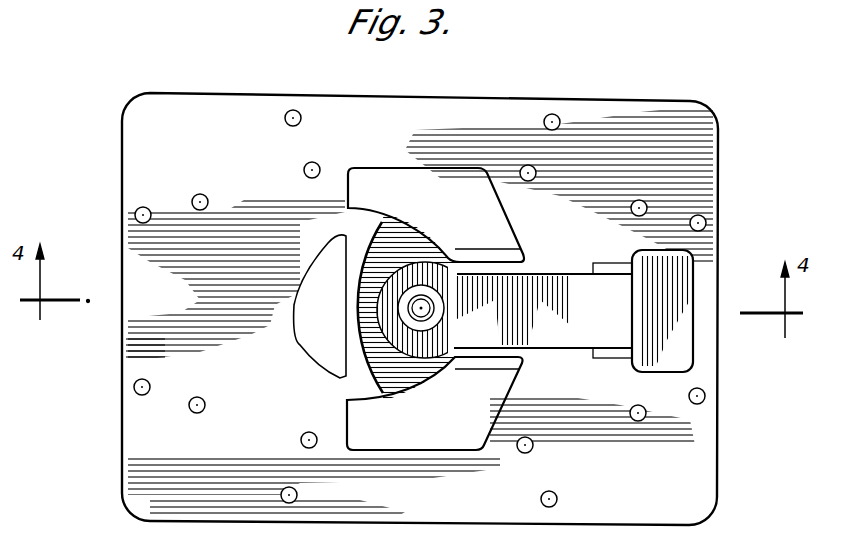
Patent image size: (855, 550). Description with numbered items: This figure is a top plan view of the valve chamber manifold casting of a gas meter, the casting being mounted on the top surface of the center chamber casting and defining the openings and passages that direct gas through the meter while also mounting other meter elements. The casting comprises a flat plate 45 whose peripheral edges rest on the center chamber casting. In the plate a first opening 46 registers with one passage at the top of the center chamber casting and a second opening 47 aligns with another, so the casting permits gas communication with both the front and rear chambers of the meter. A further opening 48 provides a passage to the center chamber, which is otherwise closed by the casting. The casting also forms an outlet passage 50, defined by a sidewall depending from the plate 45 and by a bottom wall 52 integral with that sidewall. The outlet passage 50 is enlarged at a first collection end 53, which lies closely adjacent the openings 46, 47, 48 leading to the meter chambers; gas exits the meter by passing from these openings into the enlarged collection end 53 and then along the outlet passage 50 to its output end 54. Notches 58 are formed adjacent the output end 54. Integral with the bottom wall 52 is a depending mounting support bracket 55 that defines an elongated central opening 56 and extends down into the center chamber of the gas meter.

The flat plate 45 is at (236, 143).
The first opening 46 is at (430, 447).
The second opening 47 is at (402, 168).
The opening 48 is at (322, 257).
The outlet passage 50 is at (532, 277).
The bottom wall 52 is at (606, 324).
The first collection end 53 is at (380, 233).
The output end 54 is at (684, 350).
The mounting support bracket 55 is at (436, 317).
The elongated central opening 56 is at (420, 312).
The notches 58 is at (610, 262).